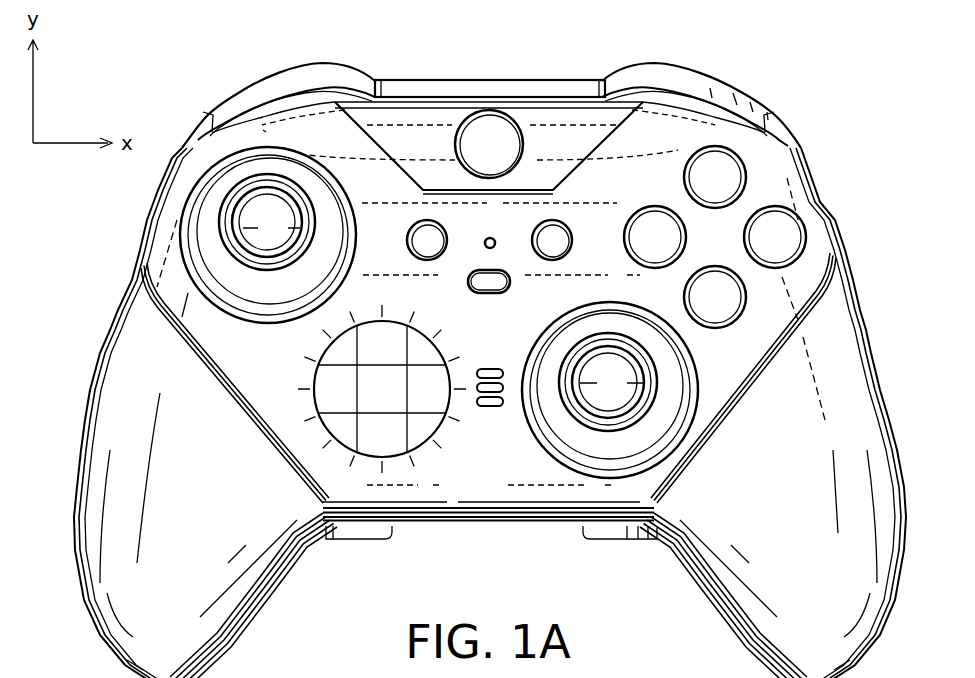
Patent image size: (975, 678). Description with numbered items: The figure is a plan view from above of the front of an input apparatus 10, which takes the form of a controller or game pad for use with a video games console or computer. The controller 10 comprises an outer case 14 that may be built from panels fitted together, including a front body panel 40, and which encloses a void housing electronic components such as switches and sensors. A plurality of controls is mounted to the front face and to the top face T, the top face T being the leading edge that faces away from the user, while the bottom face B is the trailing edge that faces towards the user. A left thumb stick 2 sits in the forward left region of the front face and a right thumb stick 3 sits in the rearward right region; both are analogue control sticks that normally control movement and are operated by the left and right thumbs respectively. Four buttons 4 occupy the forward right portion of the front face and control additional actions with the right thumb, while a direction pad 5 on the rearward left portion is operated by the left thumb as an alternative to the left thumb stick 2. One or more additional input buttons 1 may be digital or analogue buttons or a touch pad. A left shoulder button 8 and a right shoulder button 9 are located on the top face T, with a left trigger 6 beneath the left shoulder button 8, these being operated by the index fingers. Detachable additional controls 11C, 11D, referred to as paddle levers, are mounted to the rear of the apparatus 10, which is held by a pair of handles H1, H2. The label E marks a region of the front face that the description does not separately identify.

The additional input buttons 1 is at (482, 155).
The left thumb stick 2 is at (266, 230).
The right thumb stick 3 is at (605, 388).
The buttons 4 is at (708, 189).
The direction pad 5 is at (375, 401).
The left trigger 6 is at (673, 671).
The left shoulder button 8 is at (270, 88).
The right shoulder button 9 is at (680, 80).
The input apparatus 10 is at (791, 94).
The additional control 11C is at (616, 528).
The additional control 11D is at (371, 528).
The outer case 14 is at (106, 358).
The front body panel 40 is at (472, 478).
The top face T is at (470, 80).
The bottom face B is at (422, 523).
The expansion button area E is at (482, 348).
The handle H1 is at (755, 496).
The handle H2 is at (190, 496).